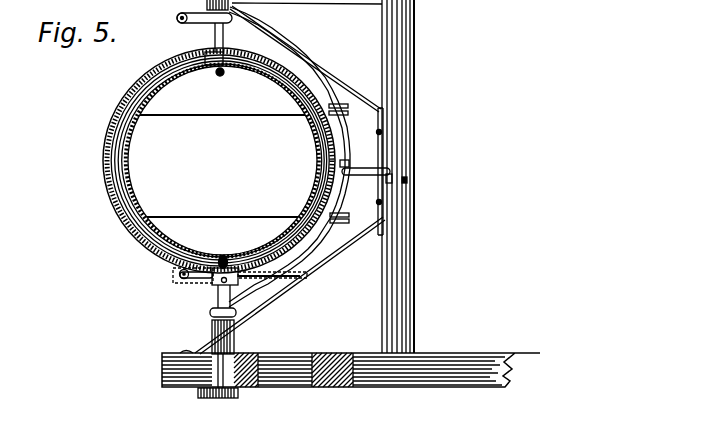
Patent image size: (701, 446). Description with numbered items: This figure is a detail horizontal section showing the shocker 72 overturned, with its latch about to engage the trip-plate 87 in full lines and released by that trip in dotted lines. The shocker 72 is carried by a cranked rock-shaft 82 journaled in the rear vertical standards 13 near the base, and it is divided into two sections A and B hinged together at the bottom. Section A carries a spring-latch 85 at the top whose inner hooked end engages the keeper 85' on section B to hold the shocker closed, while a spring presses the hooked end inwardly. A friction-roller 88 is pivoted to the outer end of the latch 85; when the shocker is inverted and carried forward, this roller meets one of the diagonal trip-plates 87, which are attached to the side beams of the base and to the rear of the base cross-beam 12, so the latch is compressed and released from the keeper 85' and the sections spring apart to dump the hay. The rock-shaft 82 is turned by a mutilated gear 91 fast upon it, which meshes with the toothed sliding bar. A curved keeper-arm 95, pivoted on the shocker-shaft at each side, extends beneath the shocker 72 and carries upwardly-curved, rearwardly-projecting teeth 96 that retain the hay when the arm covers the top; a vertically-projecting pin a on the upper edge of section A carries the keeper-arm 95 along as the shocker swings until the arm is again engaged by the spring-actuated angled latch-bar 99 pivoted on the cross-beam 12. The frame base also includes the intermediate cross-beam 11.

The shocker 72 is at (219, 160).
The teeth 96 is at (262, 116).
The cranked rock-shaft 82 is at (216, 36).
The friction-roller 88 is at (238, 285).
The spring-latch 85 is at (197, 288).
The keeper 85' is at (185, 287).
The curved keeper-arm 95 is at (298, 287).
The trip-plate 87 is at (353, 91).
The spring-actuated angled latch-bar 99 is at (370, 168).
The intermediate cross-beam 12 is at (413, 251).
The intermediate cross-beam 11 is at (458, 8).
The vertical standard 13 is at (351, 360).
The mutilated gear 91 is at (238, 396).
The shocker section A is at (326, 177).
The shocker section B is at (133, 167).
The vertically-projecting pin a is at (346, 162).